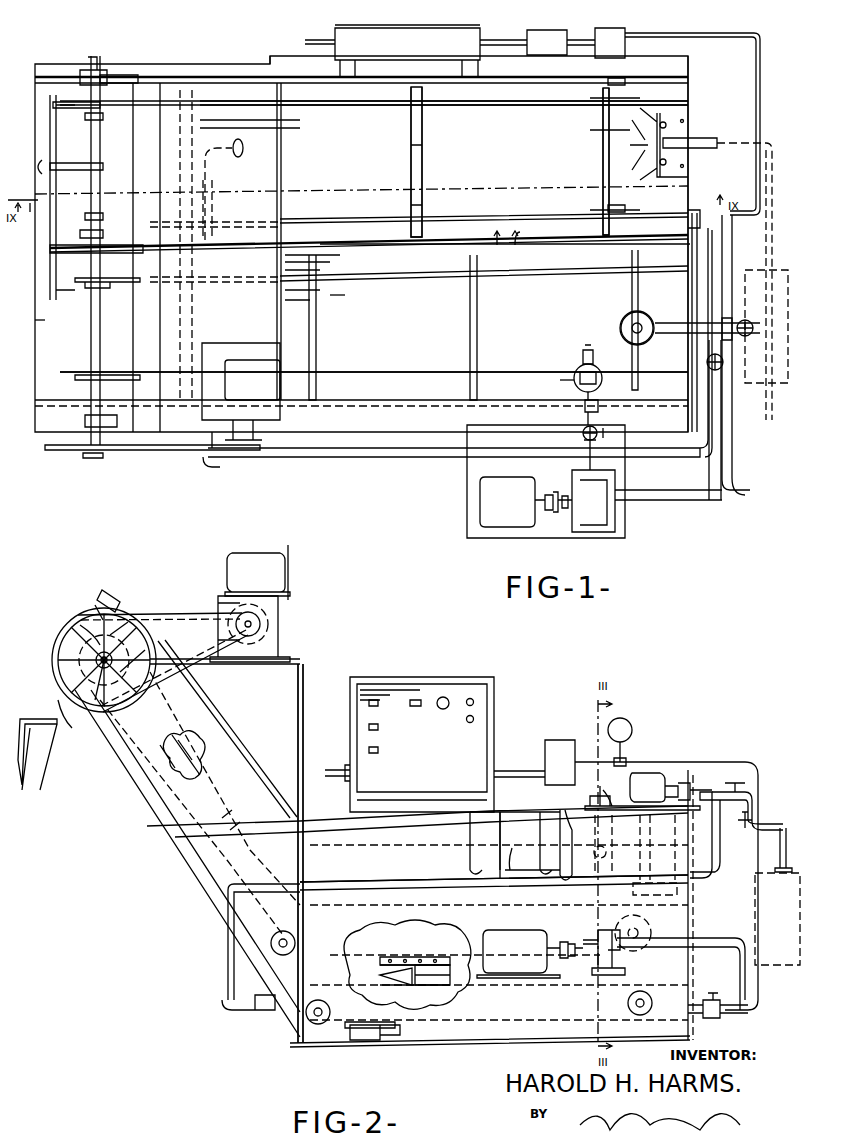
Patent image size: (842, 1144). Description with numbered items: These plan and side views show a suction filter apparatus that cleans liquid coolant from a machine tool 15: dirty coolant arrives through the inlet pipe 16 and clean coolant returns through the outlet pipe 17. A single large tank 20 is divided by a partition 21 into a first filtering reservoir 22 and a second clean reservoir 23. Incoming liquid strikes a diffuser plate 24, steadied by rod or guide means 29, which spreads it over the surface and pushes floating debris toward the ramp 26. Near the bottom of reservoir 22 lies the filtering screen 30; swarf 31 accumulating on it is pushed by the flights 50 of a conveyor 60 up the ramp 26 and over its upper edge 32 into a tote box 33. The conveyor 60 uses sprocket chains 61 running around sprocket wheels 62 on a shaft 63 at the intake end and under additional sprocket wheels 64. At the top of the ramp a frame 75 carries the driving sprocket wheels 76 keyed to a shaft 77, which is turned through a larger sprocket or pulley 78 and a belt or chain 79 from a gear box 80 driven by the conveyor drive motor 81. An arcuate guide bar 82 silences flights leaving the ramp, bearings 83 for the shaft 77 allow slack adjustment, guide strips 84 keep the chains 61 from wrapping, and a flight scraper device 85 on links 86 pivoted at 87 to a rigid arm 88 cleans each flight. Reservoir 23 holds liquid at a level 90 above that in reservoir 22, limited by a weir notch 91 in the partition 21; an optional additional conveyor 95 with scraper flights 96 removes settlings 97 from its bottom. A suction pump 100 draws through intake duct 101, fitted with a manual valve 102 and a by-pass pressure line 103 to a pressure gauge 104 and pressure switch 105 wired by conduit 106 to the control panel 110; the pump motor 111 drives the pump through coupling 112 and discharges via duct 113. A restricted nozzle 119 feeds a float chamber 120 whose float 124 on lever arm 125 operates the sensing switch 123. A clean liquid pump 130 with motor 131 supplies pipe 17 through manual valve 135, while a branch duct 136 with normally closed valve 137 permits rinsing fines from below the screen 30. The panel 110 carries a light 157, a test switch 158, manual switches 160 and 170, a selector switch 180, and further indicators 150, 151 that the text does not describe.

In FIG. 1, the machine tool 15 is at (772, 378).
In FIG. 2, the machine tool 15 is at (780, 962).
In FIG. 1, the inlet duct or pipe 16 is at (704, 146).
In FIG. 2, the inlet duct or pipe 16 is at (748, 792).
In FIG. 1, the return or outlet duct or pipe 17 is at (700, 325).
In FIG. 2, the return or outlet duct or pipe 17 is at (703, 792).
In FIG. 1, the tank 20 is at (702, 81).
In FIG. 2, the tank 20 is at (177, 895).
In FIG. 1, the partition 21 is at (345, 245).
In FIG. 2, the partition 21 is at (515, 843).
In FIG. 1, the first reservoir 22 is at (360, 164).
In FIG. 2, the first reservoir 22 is at (530, 845).
In FIG. 1, the second reservoir 23 is at (372, 326).
In FIG. 2, the second reservoir 23 is at (475, 862).
In FIG. 1, the diffuser plate 24 is at (645, 122).
In FIG. 2, the ramp 26 is at (175, 852).
In FIG. 1, the guide means 29 is at (667, 124).
In FIG. 2, the filtering means or screen 30 is at (442, 993).
In FIG. 2, the swarf 31 is at (395, 978).
In FIG. 1, the upper edge of the ramp 32 is at (40, 322).
In FIG. 2, the upper edge of the ramp 32 is at (76, 718).
In FIG. 2, the tote box 33 is at (40, 772).
In FIG. 1, the flights 50 is at (421, 143).
In FIG. 2, the flights 50 is at (432, 975).
In FIG. 2, the conveyor 60 is at (388, 955).
In FIG. 1, the sprocket chains 61 is at (372, 110).
In FIG. 2, the sprocket chains 61 is at (425, 958).
In FIG. 1, the sprocket 62 is at (628, 105).
In FIG. 2, the sprocket 62 is at (645, 925).
In FIG. 1, the shaft 63 is at (603, 128).
In FIG. 2, the additional sprocket wheels 64 is at (284, 930).
In FIG. 2, the frame 75 is at (306, 662).
In FIG. 1, the driving sprocket wheels 76 is at (103, 118).
In FIG. 1, the shaft 77 is at (100, 151).
In FIG. 2, the shaft 77 is at (108, 680).
In FIG. 1, the larger sprocket or pulley 78 is at (130, 452).
In FIG. 2, the larger sprocket or pulley 78 is at (150, 634).
In FIG. 1, the belt or chain 79 is at (183, 452).
In FIG. 1, the gear box 80 is at (248, 337).
In FIG. 2, the gear box 80 is at (280, 640).
In FIG. 1, the conveyor drive motor 81 is at (252, 380).
In FIG. 2, the conveyor drive motor 81 is at (257, 572).
In FIG. 1, the arcuate guide bar 82 is at (82, 160).
In FIG. 2, the arcuate guide bar 82 is at (82, 620).
In FIG. 1, the bearings 83 is at (100, 72).
In FIG. 2, the guide strips 84 is at (200, 760).
In FIG. 1, the flight scraper device 85 is at (50, 225).
In FIG. 2, the flight scraper device 85 is at (55, 645).
In FIG. 1, the links 86 is at (75, 100).
In FIG. 2, the links 86 is at (97, 603).
In FIG. 2, the pivot 87 is at (108, 595).
In FIG. 1, the rigid arm 88 is at (125, 76).
In FIG. 2, the rigid arm 88 is at (113, 618).
In FIG. 2, the liquid level 90 is at (570, 845).
In FIG. 1, the weir notch 91 is at (520, 240).
In FIG. 2, the weir notch 91 is at (517, 848).
In FIG. 1, the additional conveyor 95 is at (428, 372).
In FIG. 2, the additional conveyor 95 is at (398, 1035).
In FIG. 1, the scraper flights 96 is at (110, 285).
In FIG. 2, the scraper flights 96 is at (148, 625).
In FIG. 2, the settlings 97 is at (372, 1030).
In FIG. 1, the suction pump 100 is at (604, 528).
In FIG. 2, the suction pump 100 is at (600, 958).
In FIG. 1, the intake duct 101 is at (733, 428).
In FIG. 2, the intake duct 101 is at (708, 940).
In FIG. 1, the manual valve 102 is at (700, 230).
In FIG. 2, the manual valve 102 is at (712, 1018).
In FIG. 1, the by-pass pressure line 103 is at (760, 58).
In FIG. 2, the by-pass pressure line 103 is at (760, 768).
In FIG. 1, the pressure gauge 104 is at (625, 46).
In FIG. 2, the pressure gauge 104 is at (632, 730).
In FIG. 1, the pressure regulating switch means 105 is at (547, 42).
In FIG. 2, the pressure regulating switch means 105 is at (575, 737).
In FIG. 1, the conduit 106 is at (520, 40).
In FIG. 2, the conduit 106 is at (538, 772).
In FIG. 1, the electrical control panel 110 is at (392, 51).
In FIG. 2, the electrical control panel 110 is at (409, 744).
In FIG. 1, the suction pump motor 111 is at (503, 527).
In FIG. 2, the suction pump motor 111 is at (518, 954).
In FIG. 1, the coupling 112 is at (563, 490).
In FIG. 2, the coupling 112 is at (572, 940).
In FIG. 1, the duct 113 is at (583, 435).
In FIG. 1, the restricted outlet nozzle 119 is at (580, 356).
In FIG. 1, the float chamber 120 is at (602, 382).
In FIG. 2, the float chamber 120 is at (640, 860).
In FIG. 1, the sensing switch 123 is at (598, 412).
In FIG. 2, the sensing switch 123 is at (618, 790).
In FIG. 2, the float 124 is at (612, 845).
In FIG. 1, the pivoted lever arm 125 is at (574, 384).
In FIG. 2, the pivoted lever arm 125 is at (600, 796).
In FIG. 1, the clean liquid pump 130 is at (625, 313).
In FIG. 2, the clean liquid pump 130 is at (678, 891).
In FIG. 1, the electric motor 131 is at (621, 320).
In FIG. 2, the electric motor 131 is at (671, 787).
In FIG. 1, the manual valve 135 is at (748, 337).
In FIG. 2, the manual valve 135 is at (748, 830).
In FIG. 1, the branch duct 136 is at (212, 205).
In FIG. 2, the branch duct 136 is at (721, 858).
In FIG. 1, the manual valve 137 is at (722, 368).
In FIG. 2, the manual valve 137 is at (734, 775).
In FIG. 2, the indicator light 150 is at (474, 700).
In FIG. 2, the indicator light 151 is at (474, 719).
In FIG. 2, the light 157 is at (444, 697).
In FIG. 2, the manual switch 158 is at (415, 700).
In FIG. 2, the manual switch 160 is at (369, 703).
In FIG. 2, the manual switch 170 is at (369, 727).
In FIG. 2, the manual selector switch 180 is at (369, 750).